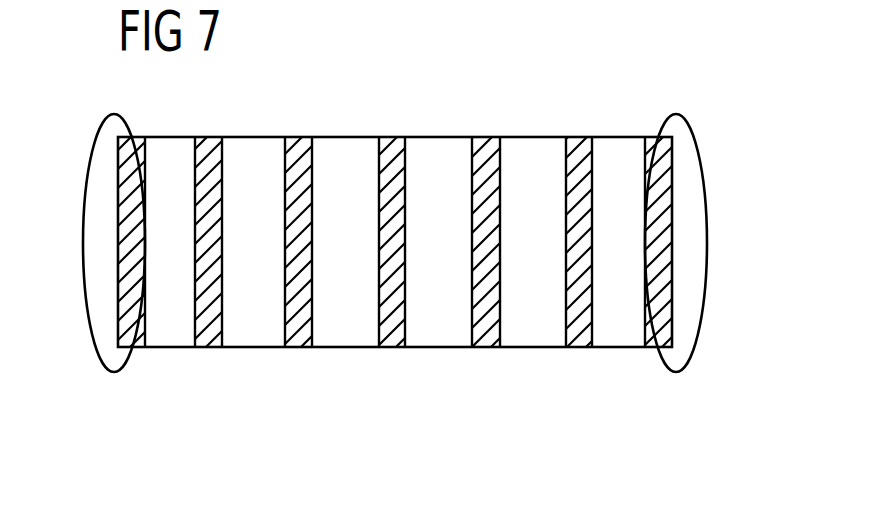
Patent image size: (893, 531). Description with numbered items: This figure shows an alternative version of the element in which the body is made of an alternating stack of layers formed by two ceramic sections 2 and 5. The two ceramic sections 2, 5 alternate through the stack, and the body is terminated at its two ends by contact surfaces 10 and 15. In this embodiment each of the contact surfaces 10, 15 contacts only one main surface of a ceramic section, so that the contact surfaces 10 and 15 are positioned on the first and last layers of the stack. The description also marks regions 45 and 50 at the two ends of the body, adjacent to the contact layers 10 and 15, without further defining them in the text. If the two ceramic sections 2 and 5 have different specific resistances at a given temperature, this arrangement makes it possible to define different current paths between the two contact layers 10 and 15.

The ceramic section 2 is at (387, 147).
The ceramic section 5 is at (246, 148).
The contact surface 10 is at (695, 262).
The contact surface 15 is at (97, 257).
The outer electrode layer 45 is at (676, 197).
The outer electrode layer 50 is at (113, 198).